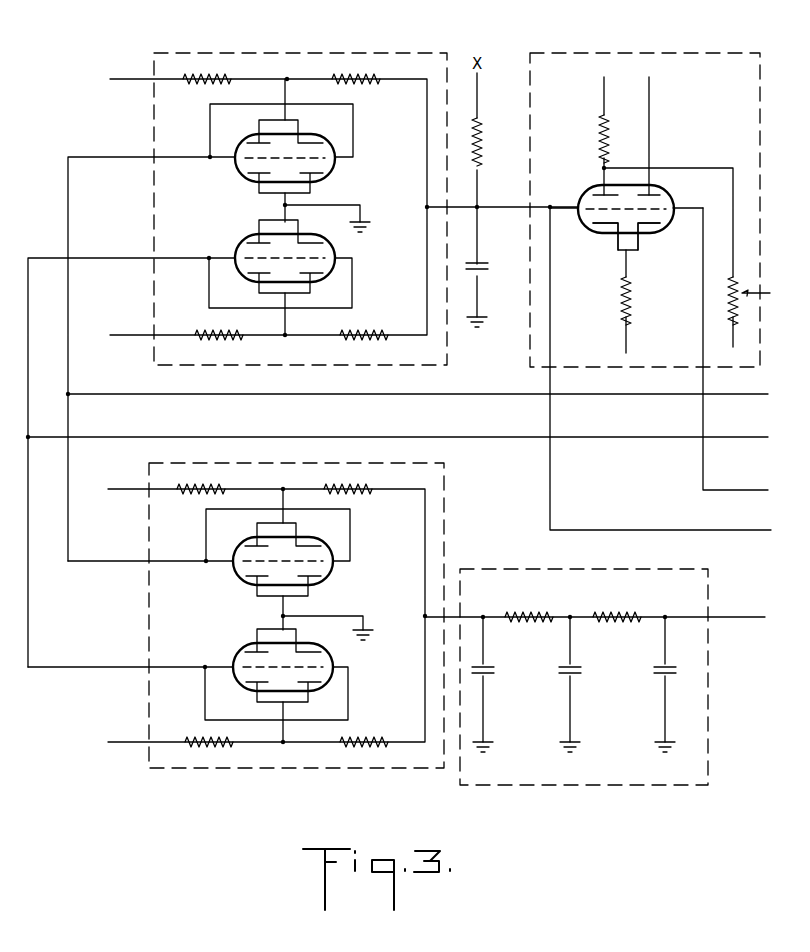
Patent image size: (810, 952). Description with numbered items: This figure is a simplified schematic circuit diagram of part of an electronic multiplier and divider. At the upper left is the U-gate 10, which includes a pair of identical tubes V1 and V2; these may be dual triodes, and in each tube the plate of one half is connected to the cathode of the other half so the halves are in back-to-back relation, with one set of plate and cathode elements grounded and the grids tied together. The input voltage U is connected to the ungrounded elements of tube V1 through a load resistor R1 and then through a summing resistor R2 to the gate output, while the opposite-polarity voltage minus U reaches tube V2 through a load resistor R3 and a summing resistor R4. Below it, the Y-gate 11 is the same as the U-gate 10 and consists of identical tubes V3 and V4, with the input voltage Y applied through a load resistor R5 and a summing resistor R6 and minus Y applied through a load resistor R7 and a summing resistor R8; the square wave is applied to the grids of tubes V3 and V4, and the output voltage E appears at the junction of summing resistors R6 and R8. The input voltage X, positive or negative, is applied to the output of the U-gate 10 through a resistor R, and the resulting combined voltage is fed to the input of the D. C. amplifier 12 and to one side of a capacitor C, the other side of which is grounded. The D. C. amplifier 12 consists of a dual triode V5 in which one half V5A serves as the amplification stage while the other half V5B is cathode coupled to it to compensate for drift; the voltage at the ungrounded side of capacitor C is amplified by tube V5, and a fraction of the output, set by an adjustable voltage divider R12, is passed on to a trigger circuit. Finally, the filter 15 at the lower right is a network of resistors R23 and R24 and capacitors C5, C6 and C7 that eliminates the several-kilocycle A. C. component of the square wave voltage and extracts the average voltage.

The U-gate 10 is at (390, 47).
The Y-gate 11 is at (455, 505).
The D. C. amplifier 12 is at (728, 46).
The filter 15 is at (718, 600).
The load resistor R1 is at (207, 70).
The summing resistor R2 is at (356, 70).
The load resistor R3 is at (219, 346).
The summing resistor R4 is at (364, 346).
The load resistor R5 is at (201, 480).
The summing resistor R6 is at (348, 480).
The load resistor R7 is at (209, 753).
The summing resistor R8 is at (364, 753).
The resistor R is at (483, 150).
The capacitor C is at (486, 272).
The adjustable voltage divider R12 is at (738, 301).
The resistor R23 is at (540, 606).
The resistor R24 is at (632, 606).
The capacitor C5 is at (496, 672).
The capacitor C6 is at (583, 672).
The capacitor C7 is at (678, 672).
The gate tube V1 is at (228, 176).
The gate tube V2 is at (226, 244).
The gate tube V3 is at (229, 586).
The gate tube V4 is at (224, 649).
The dual triode V5 is at (586, 181).
The amplification stage half V5A is at (597, 234).
The cathode-coupled half V5B is at (652, 234).